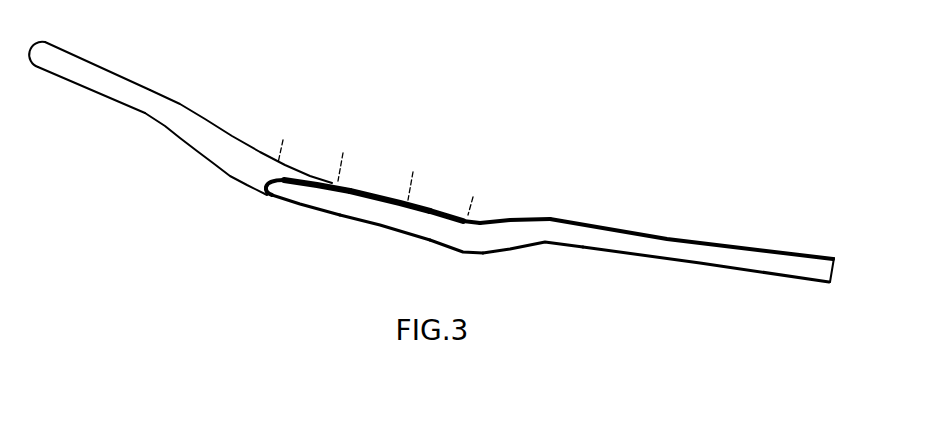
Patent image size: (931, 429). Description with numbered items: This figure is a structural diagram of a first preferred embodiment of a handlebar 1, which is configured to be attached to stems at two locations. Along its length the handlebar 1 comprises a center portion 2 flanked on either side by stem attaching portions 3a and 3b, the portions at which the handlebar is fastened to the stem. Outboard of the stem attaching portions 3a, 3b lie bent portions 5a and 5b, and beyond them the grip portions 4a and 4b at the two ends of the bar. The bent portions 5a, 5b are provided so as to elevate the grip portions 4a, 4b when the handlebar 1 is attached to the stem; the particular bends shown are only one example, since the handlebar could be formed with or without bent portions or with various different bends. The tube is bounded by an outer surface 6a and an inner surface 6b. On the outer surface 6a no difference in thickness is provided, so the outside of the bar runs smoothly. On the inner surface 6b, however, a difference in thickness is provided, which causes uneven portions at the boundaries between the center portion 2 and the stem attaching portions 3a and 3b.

The handlebar 1 is at (767, 145).
The center portion 2 is at (343, 153).
The stem attaching portion 3a is at (282, 138).
The stem attaching portion 3b is at (473, 197).
The grip portion 4a is at (93, 77).
The grip portion 4b is at (773, 262).
The bent portion 5a is at (228, 148).
The bent portion 5b is at (522, 233).
The outer surface 6a is at (185, 126).
The inner surface 6b is at (495, 237).